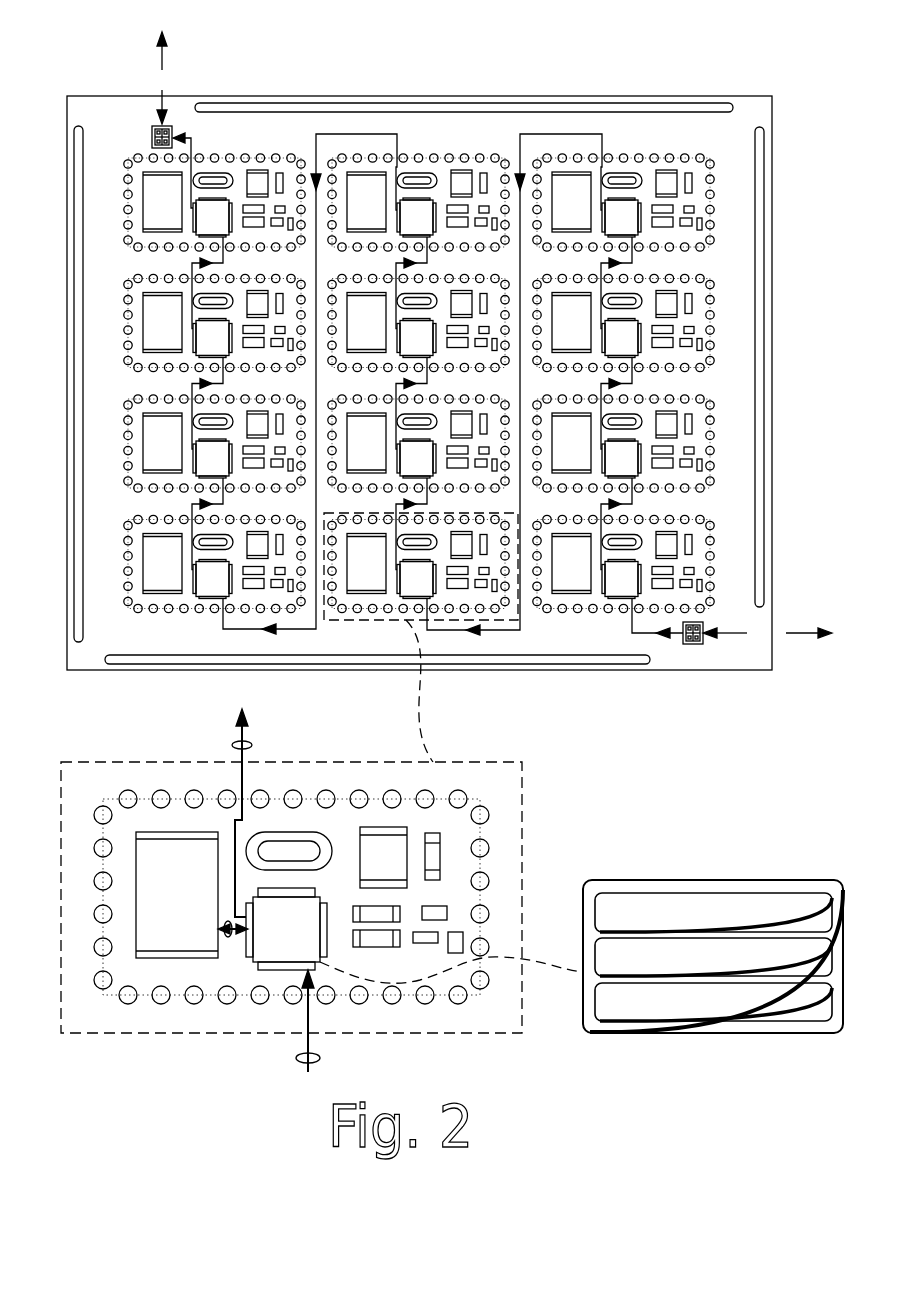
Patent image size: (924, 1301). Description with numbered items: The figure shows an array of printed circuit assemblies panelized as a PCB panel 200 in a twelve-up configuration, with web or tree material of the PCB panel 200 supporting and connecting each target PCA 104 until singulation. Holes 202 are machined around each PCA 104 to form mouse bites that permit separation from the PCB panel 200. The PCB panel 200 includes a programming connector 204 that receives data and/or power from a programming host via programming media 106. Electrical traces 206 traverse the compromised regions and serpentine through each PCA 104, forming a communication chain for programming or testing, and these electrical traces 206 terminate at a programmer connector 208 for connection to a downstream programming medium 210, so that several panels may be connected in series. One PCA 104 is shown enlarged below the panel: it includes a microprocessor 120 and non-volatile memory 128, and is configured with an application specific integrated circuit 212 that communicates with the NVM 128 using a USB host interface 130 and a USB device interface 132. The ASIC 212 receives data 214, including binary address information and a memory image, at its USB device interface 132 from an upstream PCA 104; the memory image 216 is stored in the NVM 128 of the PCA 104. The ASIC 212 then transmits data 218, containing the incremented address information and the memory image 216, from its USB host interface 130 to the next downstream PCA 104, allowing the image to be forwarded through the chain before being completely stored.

The PCB panel 200 is at (449, 356).
The output connector 208 is at (152, 124).
The programmer connector / downstream programming medium 210 is at (164, 78).
The electrical traces 206 is at (629, 622).
The programming connector 204 is at (683, 646).
The programming media 106 is at (767, 633).
The target PCA 104 is at (97, 735).
The holes 202 is at (484, 806).
The non-volatile memory 128 is at (177, 895).
The application specific integrated circuit 212 is at (286, 929).
The memory image 216 is at (228, 942).
The data 214 is at (315, 1058).
The data 218 is at (253, 745).
The microprocessor 120 is at (713, 912).
The USB host interface 130 is at (713, 957).
The USB device interface 132 is at (713, 1002).